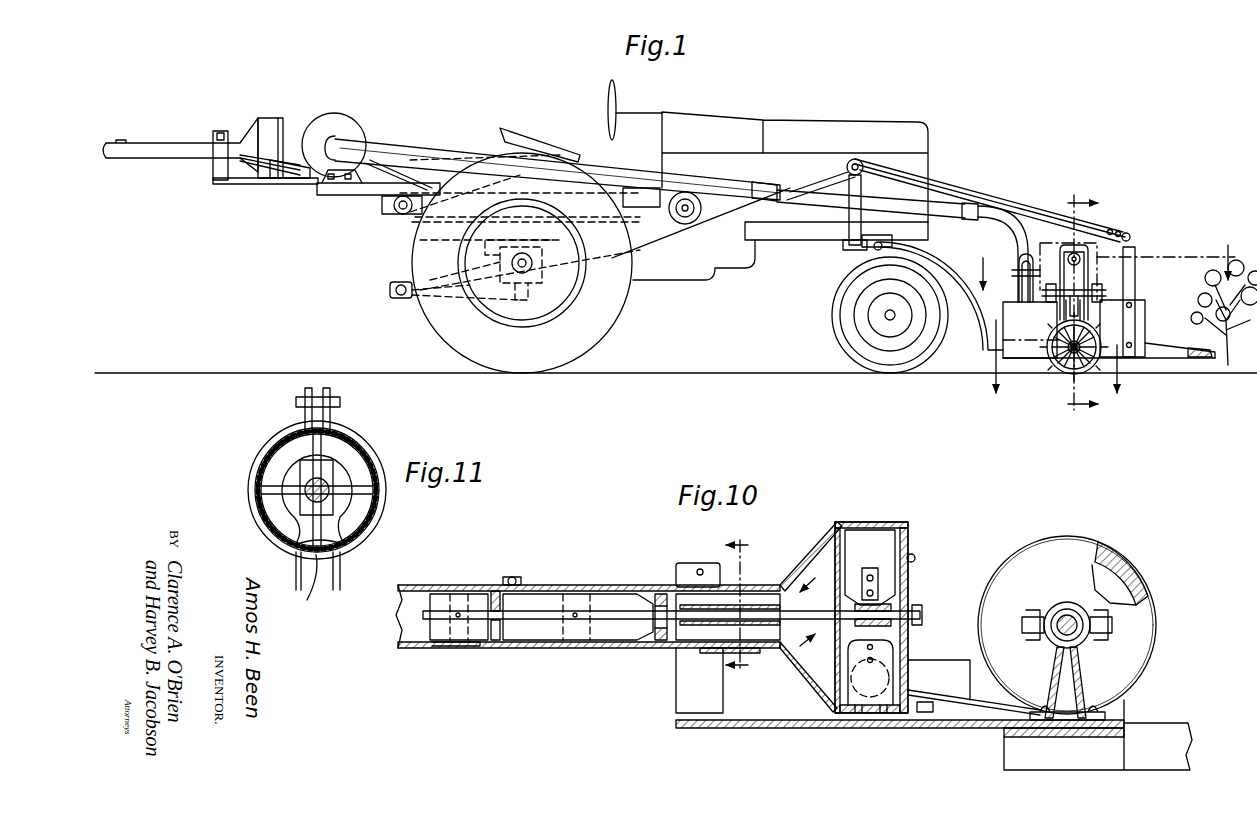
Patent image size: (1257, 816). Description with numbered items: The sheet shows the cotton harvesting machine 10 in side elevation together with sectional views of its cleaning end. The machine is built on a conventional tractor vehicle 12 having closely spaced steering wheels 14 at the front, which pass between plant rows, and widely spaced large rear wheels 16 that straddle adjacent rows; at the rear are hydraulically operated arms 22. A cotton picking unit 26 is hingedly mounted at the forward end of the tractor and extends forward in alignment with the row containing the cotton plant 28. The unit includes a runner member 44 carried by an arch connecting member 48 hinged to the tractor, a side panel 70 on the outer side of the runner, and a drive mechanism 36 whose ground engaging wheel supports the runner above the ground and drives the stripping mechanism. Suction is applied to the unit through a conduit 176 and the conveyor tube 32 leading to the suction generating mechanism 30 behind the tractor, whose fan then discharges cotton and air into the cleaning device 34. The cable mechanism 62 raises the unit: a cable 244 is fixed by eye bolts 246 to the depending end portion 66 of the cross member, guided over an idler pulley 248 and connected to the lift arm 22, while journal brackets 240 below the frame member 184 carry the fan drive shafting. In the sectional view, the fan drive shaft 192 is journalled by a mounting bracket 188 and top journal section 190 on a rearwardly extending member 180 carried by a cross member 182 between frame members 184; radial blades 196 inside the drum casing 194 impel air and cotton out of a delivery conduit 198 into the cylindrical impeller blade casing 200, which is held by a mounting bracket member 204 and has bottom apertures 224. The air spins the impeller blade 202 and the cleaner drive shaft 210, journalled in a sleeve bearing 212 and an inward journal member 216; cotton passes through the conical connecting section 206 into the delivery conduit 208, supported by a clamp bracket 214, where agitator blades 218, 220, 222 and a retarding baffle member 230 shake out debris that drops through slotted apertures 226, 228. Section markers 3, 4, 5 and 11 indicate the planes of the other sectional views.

In FIG. 1, the cotton harvesting machine 10 is at (977, 103).
In FIG. 1, the tractor vehicle 12 is at (774, 118).
In FIG. 1, the steering wheels 14 is at (879, 360).
In FIG. 1, the rear wheels 16 is at (578, 352).
In FIG. 1, the hydraulically operated arms 22 is at (398, 287).
In FIG. 1, the cotton picking unit 26 is at (1040, 360).
In FIG. 1, the cotton plant 28 is at (1252, 300).
In FIG. 1, the suction generating mechanism 30 is at (334, 128).
In FIG. 10, the suction generating mechanism 30 is at (1073, 544).
In FIG. 1, the conveyor tube 32 is at (712, 182).
In FIG. 1, the cleaning device 34 is at (232, 138).
In FIG. 10, the cleaning device 34 is at (789, 545).
In FIG. 1, the drive mechanism 36 is at (1054, 372).
In FIG. 1, the runner member 44 is at (1190, 356).
In FIG. 1, the arch connecting member 48 is at (956, 271).
In FIG. 1, the cable mechanism 62 is at (962, 184).
In FIG. 1, the depending end portion 66 is at (1132, 293).
In FIG. 1, the side panel 70 is at (1143, 318).
In FIG. 1, the conduit 176 is at (1023, 277).
In FIG. 10, the rearwardly extending member 180 is at (833, 723).
In FIG. 10, the cross member 182 is at (1028, 740).
In FIG. 1, the rearwardly extending frame member 184 is at (366, 190).
In FIG. 10, the mounting bracket 188 is at (1080, 692).
In FIG. 10, the top journal section 190 is at (1050, 602).
In FIG. 10, the drive shaft 192 is at (1092, 612).
In FIG. 10, the drum casing 194 is at (1146, 629).
In FIG. 10, the blades 196 is at (1116, 558).
In FIG. 10, the delivery conduit 198 is at (945, 672).
In FIG. 10, the impeller blade casing 200 is at (872, 520).
In FIG. 10, the impeller blade 202 is at (880, 545).
In FIG. 10, the mounting bracket member 204 is at (906, 580).
In FIG. 10, the conical connecting section 206 is at (796, 558).
In FIG. 10, the delivery conduit 208 is at (598, 588).
In FIG. 10, the cleaner drive shaft 210 is at (751, 611).
In FIG. 10, the journal sleeve bearing 212 is at (913, 612).
In FIG. 11, the clamp bracket 214 is at (366, 445).
In FIG. 10, the clamp bracket 214 is at (681, 578).
In FIG. 10, the journal member 216 is at (491, 595).
In FIG. 11, the agitator blade 218 is at (366, 496).
In FIG. 10, the agitator blade 218 is at (707, 598).
In FIG. 10, the agitator blade 220 is at (541, 600).
In FIG. 10, the agitator blade 222 is at (434, 600).
In FIG. 10, the apertures 224 is at (879, 710).
In FIG. 11, the slotted aperture 226 is at (313, 588).
In FIG. 10, the slotted aperture 226 is at (712, 651).
In FIG. 10, the slotted aperture 228 is at (463, 649).
In FIG. 11, the retarding baffle member 230 is at (358, 468).
In FIG. 10, the retarding baffle member 230 is at (651, 639).
In FIG. 1, the journal brackets 240 is at (390, 210).
In FIG. 1, the cable 244 is at (993, 196).
In FIG. 1, the eye bolts 246 is at (1132, 238).
In FIG. 1, the idler pulley 248 is at (857, 159).
In FIG. 1, the section line 3- 3 is at (1082, 307).
In FIG. 1, the section line 4- 4 is at (1109, 255).
In FIG. 1, the section line 5- 5 is at (1051, 359).
In FIG. 10, the section line 11- 11 is at (749, 604).